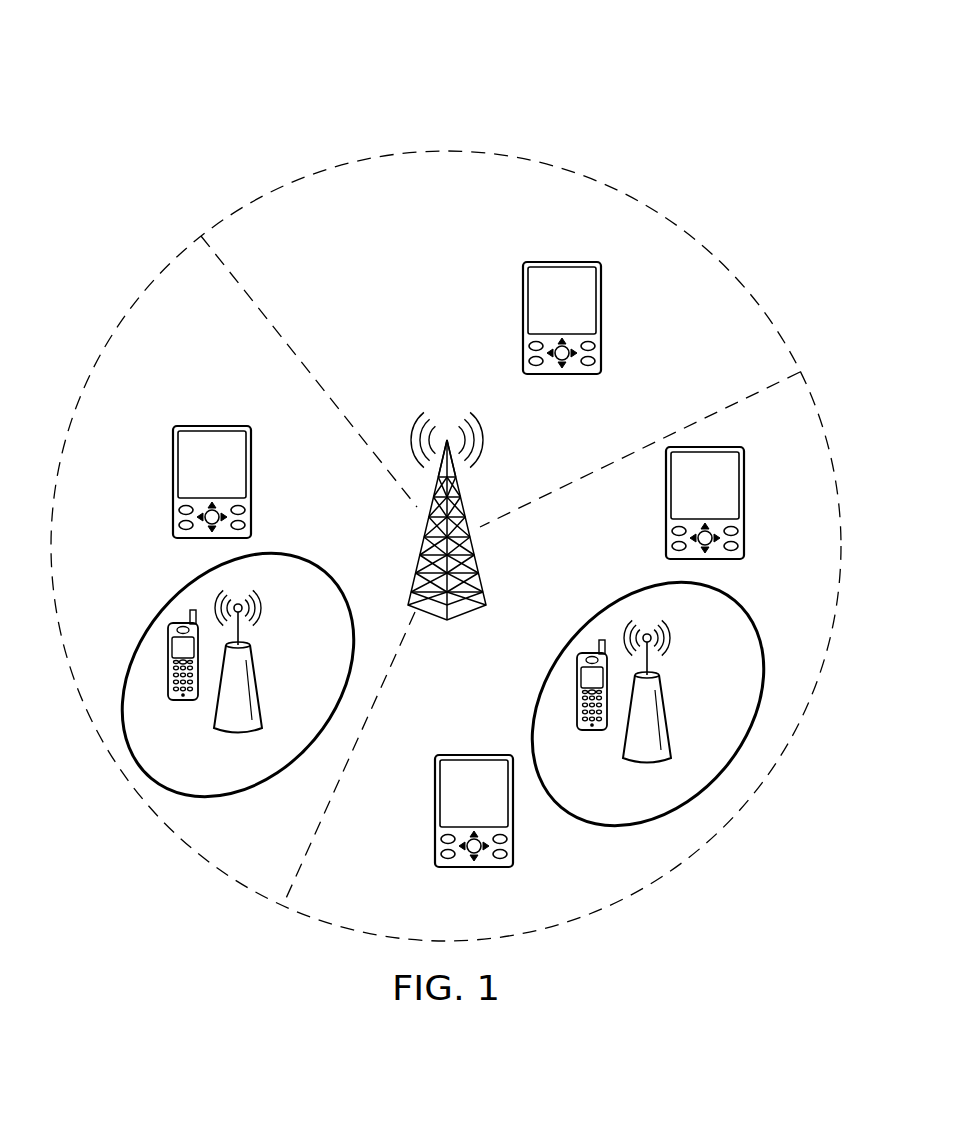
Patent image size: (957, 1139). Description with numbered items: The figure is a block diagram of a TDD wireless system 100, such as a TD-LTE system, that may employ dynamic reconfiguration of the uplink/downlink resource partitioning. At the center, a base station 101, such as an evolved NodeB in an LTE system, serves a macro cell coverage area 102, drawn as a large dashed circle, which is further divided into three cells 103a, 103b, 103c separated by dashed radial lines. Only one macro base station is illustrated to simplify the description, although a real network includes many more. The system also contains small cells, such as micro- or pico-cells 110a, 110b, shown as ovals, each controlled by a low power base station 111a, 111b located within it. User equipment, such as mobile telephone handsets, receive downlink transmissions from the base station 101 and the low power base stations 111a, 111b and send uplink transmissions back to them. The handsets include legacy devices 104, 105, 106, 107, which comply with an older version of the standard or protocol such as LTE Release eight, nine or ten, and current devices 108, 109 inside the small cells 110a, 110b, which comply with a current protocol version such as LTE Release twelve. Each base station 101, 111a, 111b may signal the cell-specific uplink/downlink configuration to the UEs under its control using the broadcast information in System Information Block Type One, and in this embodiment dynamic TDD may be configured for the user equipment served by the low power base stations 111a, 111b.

The TDD wireless system 100 is at (228, 90).
The base station 101 is at (478, 563).
The macro cell coverage area 102 is at (305, 178).
The cell 103a is at (496, 694).
The cell 103b is at (453, 310).
The cell 103c is at (353, 508).
The user equipment 104 is at (435, 810).
The user equipment 105 is at (745, 502).
The user equipment 106 is at (602, 318).
The user equipment 107 is at (173, 480).
The user equipment 108 is at (591, 731).
The user equipment 109 is at (182, 700).
The small cell 110a is at (620, 595).
The small cell 110b is at (165, 603).
The low power base station 111a is at (665, 716).
The low power base station 111b is at (255, 686).